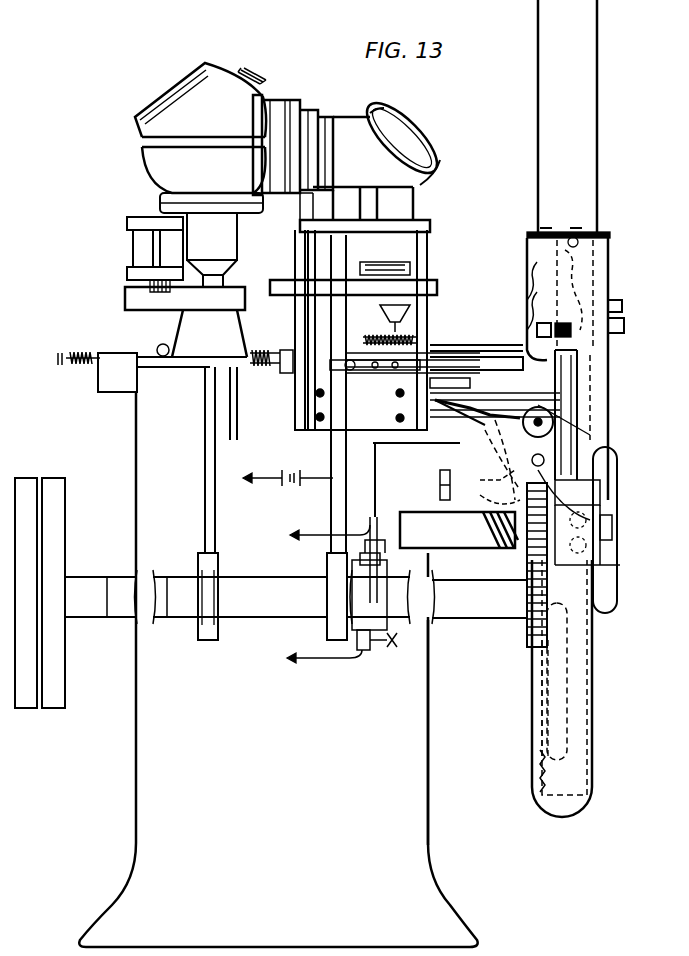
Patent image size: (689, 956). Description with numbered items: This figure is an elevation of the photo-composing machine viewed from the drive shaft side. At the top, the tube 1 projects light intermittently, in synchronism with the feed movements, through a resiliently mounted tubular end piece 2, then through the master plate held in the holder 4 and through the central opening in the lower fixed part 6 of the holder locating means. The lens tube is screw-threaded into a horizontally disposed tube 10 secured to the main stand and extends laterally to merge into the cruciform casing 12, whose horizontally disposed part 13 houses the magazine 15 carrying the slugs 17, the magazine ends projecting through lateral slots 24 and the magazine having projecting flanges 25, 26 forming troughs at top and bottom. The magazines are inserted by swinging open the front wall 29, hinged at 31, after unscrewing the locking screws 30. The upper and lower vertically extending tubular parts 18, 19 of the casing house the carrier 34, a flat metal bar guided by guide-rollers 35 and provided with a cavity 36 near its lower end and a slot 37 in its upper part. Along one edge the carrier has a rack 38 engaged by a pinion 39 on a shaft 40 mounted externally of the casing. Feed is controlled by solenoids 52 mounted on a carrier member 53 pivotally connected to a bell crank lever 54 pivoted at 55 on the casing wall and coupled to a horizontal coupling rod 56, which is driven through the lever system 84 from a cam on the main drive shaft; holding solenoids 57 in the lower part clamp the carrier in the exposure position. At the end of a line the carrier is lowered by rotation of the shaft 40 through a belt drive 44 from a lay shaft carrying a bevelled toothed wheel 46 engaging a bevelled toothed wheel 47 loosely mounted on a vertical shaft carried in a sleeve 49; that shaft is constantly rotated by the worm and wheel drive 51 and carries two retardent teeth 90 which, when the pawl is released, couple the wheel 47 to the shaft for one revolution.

The tube 1 is at (412, 275).
The tubular end piece 2 is at (390, 324).
The holder 4 is at (412, 333).
The lower fixed part 6 is at (452, 360).
The horizontally disposed tube 10 is at (470, 368).
The casing 12 is at (500, 372).
The horizontally disposed part 13 is at (577, 366).
The magazine 15 is at (580, 398).
The slug 17 is at (580, 420).
The upper vertically extending tubular part 18 is at (594, 136).
The lower vertically extending tubular part 19 is at (592, 750).
The lateral slot 24 is at (585, 437).
The projecting flange 25 is at (587, 353).
The projecting flange 26 is at (590, 492).
The front wall 29 is at (603, 383).
The locking screw 30 is at (620, 326).
The hinge 31 is at (605, 510).
The carrier 34 is at (605, 247).
The guide-roller 35 is at (527, 252).
The cavity 36 is at (542, 717).
The slot 37 is at (617, 461).
The rack 38 is at (538, 775).
The pinion 39 is at (520, 552).
The shaft 40 is at (478, 530).
The belt drive 44 is at (488, 478).
The bevelled toothed wheel 46 is at (495, 452).
The bevelled toothed wheel 47 is at (430, 398).
The sleeve 49 is at (488, 490).
The worm and wheel drive 51 is at (483, 550).
The solenoid 52 is at (603, 287).
The carrier member 53 is at (580, 230).
The bell crank lever 54 is at (537, 326).
The pivot 55 is at (553, 333).
The coupling rod 56 is at (293, 350).
The holding solenoid 57 is at (605, 552).
The lever 84 is at (70, 352).
The retardent tooth 90 is at (480, 418).